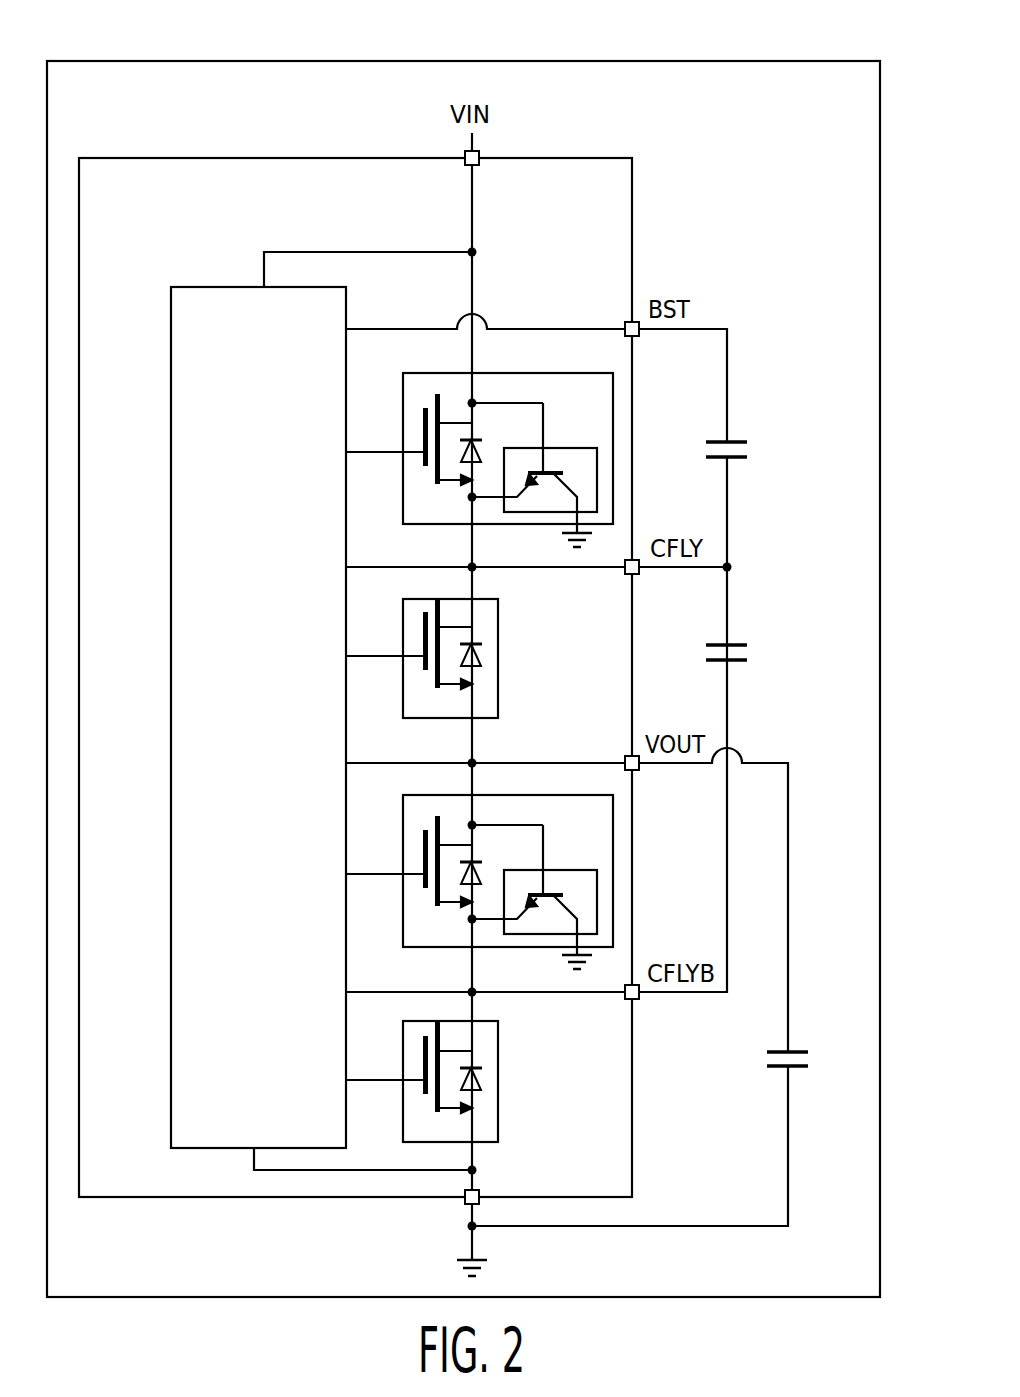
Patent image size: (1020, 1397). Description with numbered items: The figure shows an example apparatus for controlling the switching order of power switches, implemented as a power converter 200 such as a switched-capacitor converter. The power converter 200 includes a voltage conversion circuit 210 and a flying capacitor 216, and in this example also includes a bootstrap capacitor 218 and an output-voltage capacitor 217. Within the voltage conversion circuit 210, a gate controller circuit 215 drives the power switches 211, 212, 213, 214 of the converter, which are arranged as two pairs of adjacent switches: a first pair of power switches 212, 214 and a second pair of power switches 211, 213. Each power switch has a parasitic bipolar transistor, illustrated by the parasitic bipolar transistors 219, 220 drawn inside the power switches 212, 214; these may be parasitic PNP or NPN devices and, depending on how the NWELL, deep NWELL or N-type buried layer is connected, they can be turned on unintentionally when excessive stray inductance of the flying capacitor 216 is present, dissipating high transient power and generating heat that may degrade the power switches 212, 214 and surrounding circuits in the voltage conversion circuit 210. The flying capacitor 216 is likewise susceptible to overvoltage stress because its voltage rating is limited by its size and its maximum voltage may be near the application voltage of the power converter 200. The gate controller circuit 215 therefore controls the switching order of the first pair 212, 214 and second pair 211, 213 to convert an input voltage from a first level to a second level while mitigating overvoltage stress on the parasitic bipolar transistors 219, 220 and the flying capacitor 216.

The power converter 200 is at (785, 61).
The voltage conversion circuit 210 is at (592, 158).
The power switch 211 is at (498, 1075).
The power switch 212 is at (565, 795).
The power switch 213 is at (498, 627).
The power switch 214 is at (553, 373).
The gate controller circuit 215 is at (171, 300).
The flying capacitor 216 is at (738, 640).
The output-voltage capacitor 217 is at (780, 1068).
The bootstrap capacitor 218 is at (738, 440).
The parasitic bipolar transistor 219 is at (597, 462).
The parasitic bipolar transistor 220 is at (598, 866).